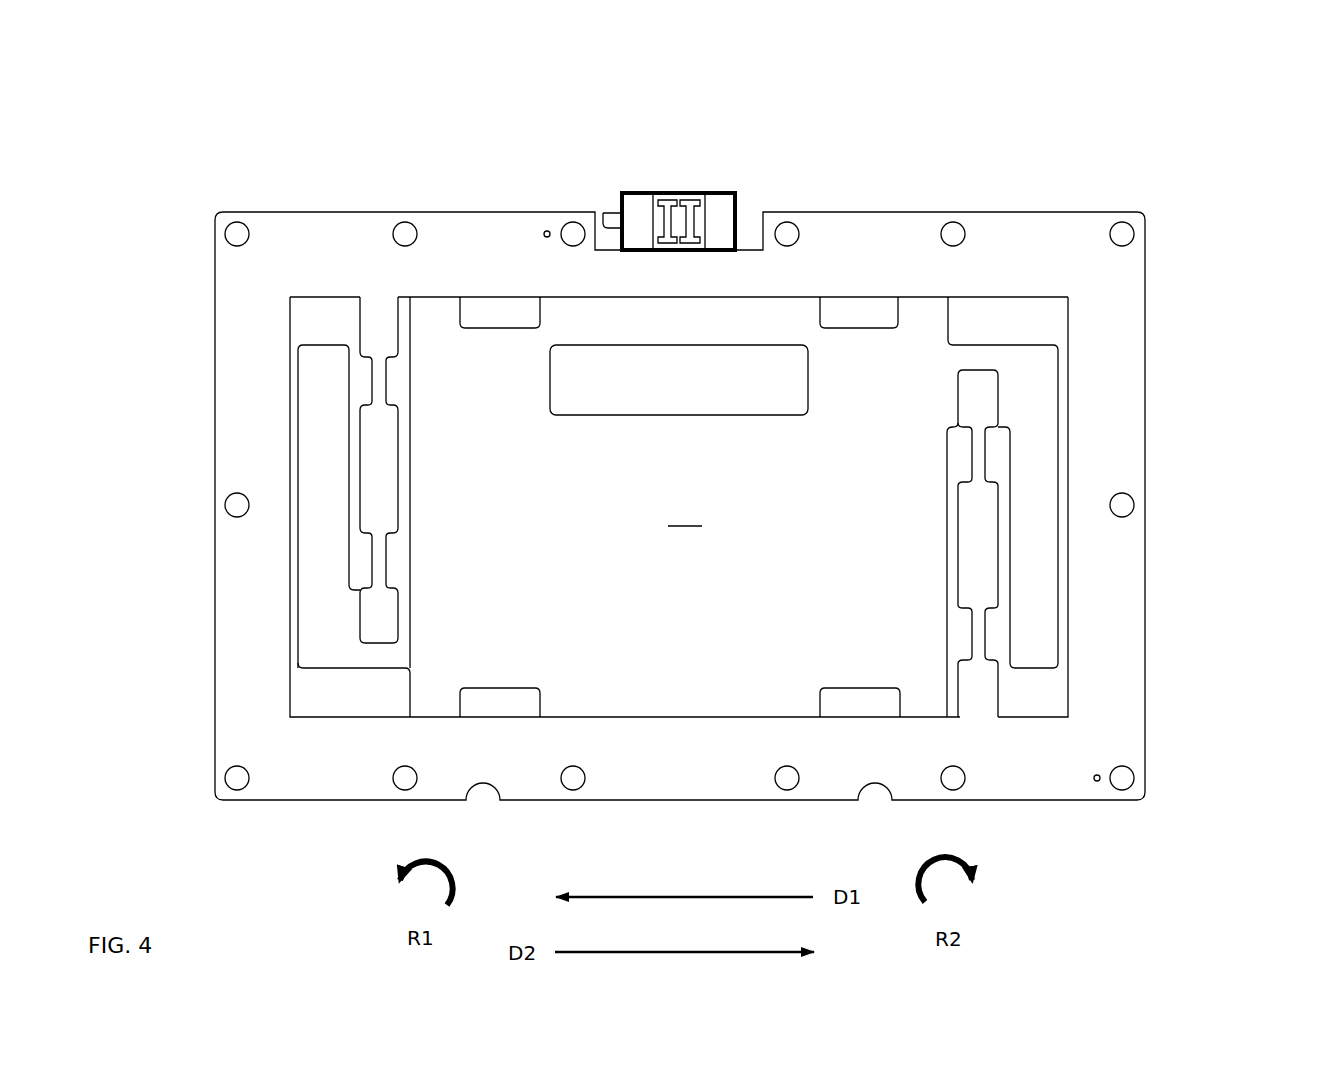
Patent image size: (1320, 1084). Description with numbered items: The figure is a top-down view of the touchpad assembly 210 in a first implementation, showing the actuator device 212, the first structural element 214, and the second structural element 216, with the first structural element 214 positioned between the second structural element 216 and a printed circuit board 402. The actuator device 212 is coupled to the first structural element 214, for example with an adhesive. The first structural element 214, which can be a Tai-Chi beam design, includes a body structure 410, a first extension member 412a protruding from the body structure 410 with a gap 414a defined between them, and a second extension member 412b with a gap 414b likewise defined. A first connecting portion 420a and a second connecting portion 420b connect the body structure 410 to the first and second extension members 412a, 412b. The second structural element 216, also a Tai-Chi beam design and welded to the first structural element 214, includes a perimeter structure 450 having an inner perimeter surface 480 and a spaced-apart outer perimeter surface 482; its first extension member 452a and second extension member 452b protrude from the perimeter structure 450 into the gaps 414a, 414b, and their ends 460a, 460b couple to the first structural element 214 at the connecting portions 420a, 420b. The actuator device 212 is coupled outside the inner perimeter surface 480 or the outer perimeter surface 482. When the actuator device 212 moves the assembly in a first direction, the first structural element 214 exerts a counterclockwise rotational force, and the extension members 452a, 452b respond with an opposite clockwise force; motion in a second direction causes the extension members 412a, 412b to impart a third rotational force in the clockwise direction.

The touchpad assembly 210 is at (1212, 76).
The actuator device 212 is at (687, 188).
The first structural element 214 is at (586, 318).
The second structural element 216 is at (328, 220).
The printed circuit board 402 is at (995, 314).
The body structure 410 is at (685, 515).
The first extension member 412a is at (316, 494).
The second extension member 412b is at (1052, 571).
The gap 414a is at (366, 574).
The gap 414b is at (1007, 634).
The first connecting portion 420a is at (373, 666).
The second connecting portion 420b is at (1002, 356).
The perimeter structure 450 is at (1107, 217).
The first extension member 452a is at (370, 471).
The second extension member 452b is at (1005, 500).
The end 460a is at (364, 620).
The end 460b is at (1002, 400).
The inner perimeter surface 480 is at (808, 304).
The outer perimeter surface 482 is at (895, 206).